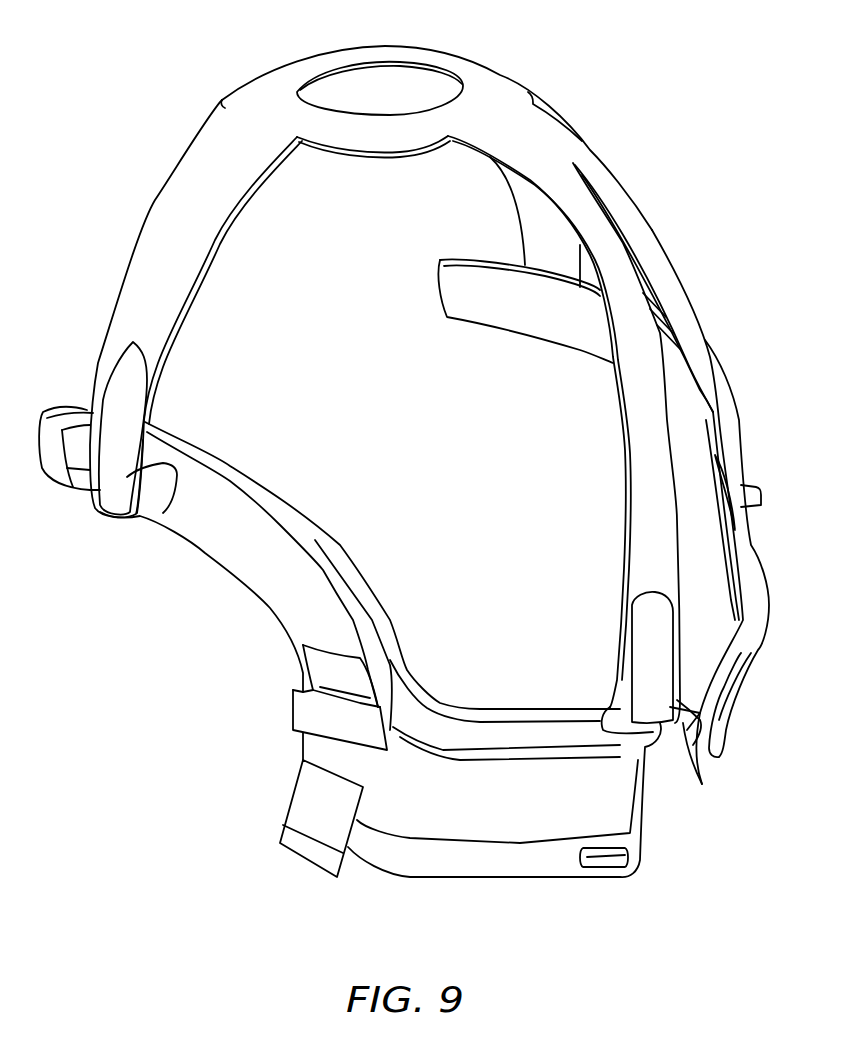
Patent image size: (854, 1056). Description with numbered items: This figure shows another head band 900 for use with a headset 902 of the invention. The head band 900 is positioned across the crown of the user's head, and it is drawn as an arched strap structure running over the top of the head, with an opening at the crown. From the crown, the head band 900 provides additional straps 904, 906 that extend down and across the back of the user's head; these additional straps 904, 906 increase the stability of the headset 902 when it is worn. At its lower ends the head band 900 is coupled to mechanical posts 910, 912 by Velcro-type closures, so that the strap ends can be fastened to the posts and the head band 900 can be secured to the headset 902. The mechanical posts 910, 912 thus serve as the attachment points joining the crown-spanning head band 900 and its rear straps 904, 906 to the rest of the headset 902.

The head band 900 is at (485, 73).
The headset 902 is at (100, 768).
The strap 904 is at (617, 412).
The strap 906 is at (615, 176).
The mechanical post 910 is at (205, 552).
The mechanical post 912 is at (725, 380).